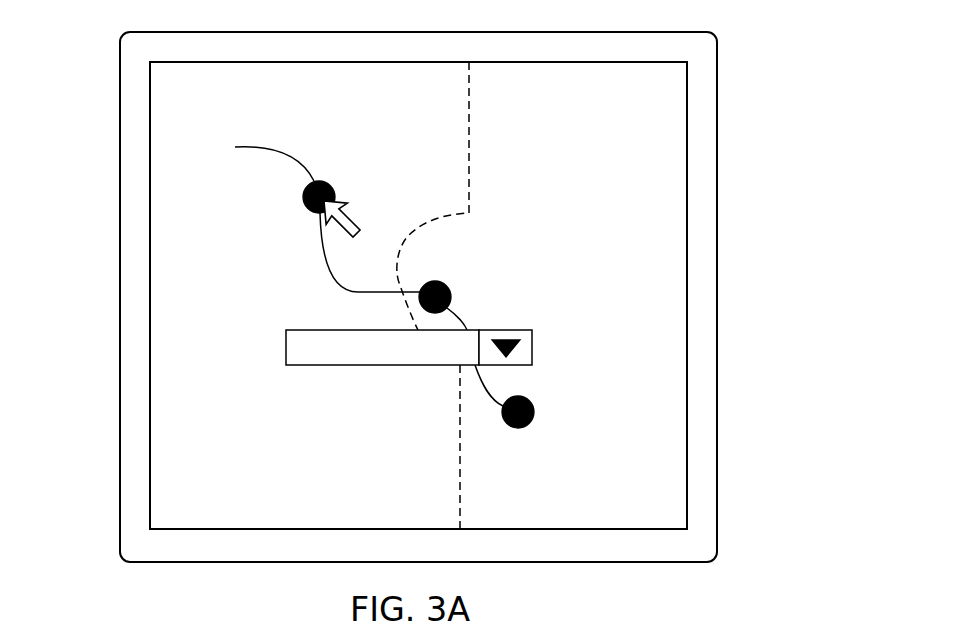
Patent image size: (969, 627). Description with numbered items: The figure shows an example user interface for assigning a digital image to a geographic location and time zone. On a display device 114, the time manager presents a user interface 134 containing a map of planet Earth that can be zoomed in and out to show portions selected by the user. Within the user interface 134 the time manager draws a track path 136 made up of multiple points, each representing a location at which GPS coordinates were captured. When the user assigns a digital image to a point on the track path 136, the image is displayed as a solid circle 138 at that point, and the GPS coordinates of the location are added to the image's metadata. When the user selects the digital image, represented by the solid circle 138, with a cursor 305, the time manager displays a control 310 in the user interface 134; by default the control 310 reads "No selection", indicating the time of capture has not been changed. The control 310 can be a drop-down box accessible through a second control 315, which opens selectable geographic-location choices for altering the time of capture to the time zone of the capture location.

The display device 114 is at (717, 66).
The user interface 134 is at (687, 137).
The solid circle 138 is at (310, 199).
The cursor 305 is at (356, 223).
The control 310 is at (286, 346).
The second control 315 is at (532, 346).
The track path 136 is at (503, 405).